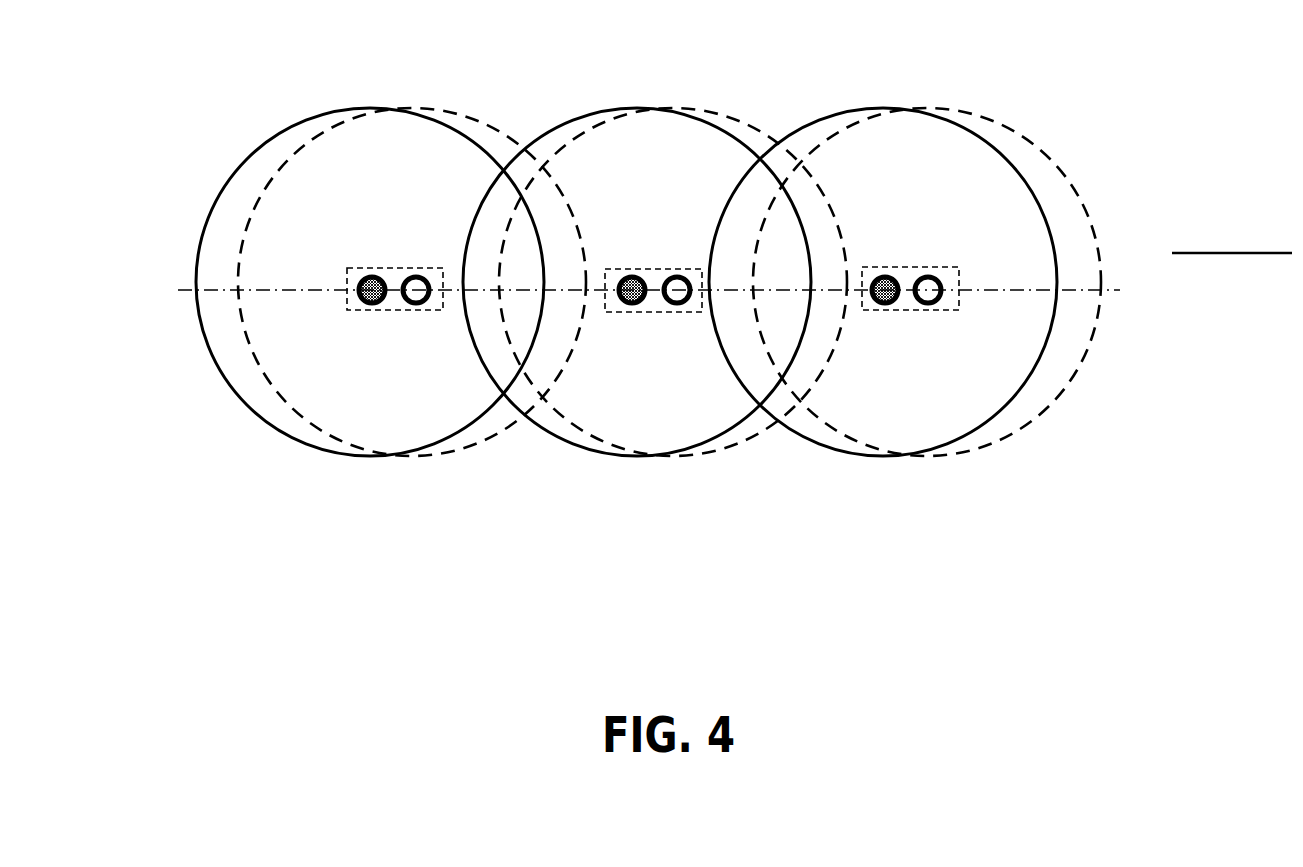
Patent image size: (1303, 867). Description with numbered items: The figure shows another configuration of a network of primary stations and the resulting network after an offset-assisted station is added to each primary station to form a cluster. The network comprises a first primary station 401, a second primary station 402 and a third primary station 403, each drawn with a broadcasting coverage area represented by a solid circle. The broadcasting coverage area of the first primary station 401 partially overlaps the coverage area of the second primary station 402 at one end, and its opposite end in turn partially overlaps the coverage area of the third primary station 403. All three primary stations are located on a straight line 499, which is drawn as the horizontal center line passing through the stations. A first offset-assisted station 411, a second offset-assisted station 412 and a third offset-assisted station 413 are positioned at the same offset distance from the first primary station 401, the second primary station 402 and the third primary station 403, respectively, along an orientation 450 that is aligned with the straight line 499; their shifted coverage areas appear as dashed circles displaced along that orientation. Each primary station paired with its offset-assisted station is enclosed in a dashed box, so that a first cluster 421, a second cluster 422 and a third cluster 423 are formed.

The first primary station 401 is at (351, 305).
The first offset-assisted station 411 is at (417, 305).
The second primary station 402 is at (611, 304).
The second offset-assisted station 412 is at (678, 304).
The third primary station 403 is at (865, 305).
The third offset-assisted station 413 is at (936, 305).
The first cluster 421 is at (347, 268).
The second cluster 422 is at (640, 313).
The third cluster 423 is at (959, 298).
The orientation 450 is at (1232, 222).
The straight line 499 is at (624, 327).